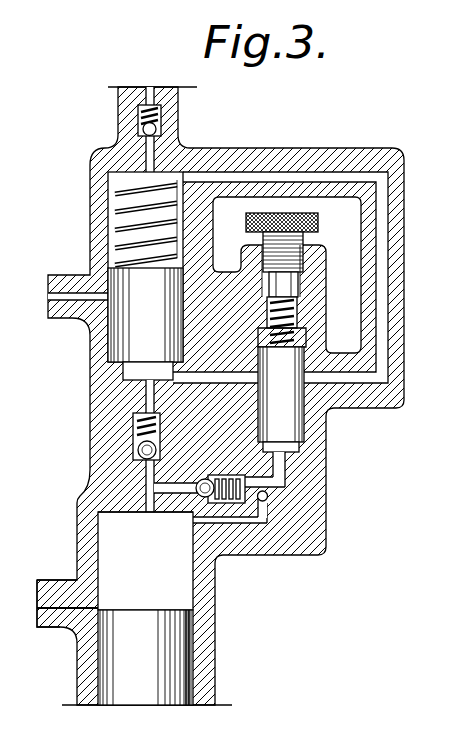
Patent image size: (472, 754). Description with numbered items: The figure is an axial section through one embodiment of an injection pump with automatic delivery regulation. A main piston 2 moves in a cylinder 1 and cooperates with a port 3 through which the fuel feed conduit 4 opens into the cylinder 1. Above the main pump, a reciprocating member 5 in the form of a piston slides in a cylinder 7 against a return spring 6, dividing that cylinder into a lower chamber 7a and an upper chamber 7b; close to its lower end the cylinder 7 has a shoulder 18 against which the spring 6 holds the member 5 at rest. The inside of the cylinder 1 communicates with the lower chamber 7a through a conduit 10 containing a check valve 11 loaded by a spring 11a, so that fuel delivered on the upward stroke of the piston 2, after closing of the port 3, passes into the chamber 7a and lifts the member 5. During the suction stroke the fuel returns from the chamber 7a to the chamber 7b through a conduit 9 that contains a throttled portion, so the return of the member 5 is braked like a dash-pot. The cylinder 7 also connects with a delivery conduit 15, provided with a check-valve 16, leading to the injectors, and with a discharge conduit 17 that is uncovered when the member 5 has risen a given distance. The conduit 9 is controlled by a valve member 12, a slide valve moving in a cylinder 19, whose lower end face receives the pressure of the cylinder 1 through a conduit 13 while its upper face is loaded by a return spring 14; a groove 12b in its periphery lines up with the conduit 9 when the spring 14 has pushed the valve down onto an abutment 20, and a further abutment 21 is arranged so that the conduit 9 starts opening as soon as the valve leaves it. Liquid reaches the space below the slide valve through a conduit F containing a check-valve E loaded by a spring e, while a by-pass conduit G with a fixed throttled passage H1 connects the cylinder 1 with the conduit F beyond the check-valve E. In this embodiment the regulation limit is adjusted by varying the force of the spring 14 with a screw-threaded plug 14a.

The cylinder 1 is at (193, 586).
The main piston 2 is at (170, 645).
The port 3 is at (98, 604).
The fuel feed conduit 4 is at (63, 604).
The reciprocating member 5 is at (127, 338).
The return spring 6 is at (108, 217).
The cylinder 7 is at (114, 248).
The lower chamber 7a is at (128, 372).
The chamber 7b is at (116, 194).
The conduit 9 is at (381, 212).
The conduit 10 is at (147, 498).
The check valve 11 is at (138, 450).
The spring 11a is at (133, 423).
The valve member 12 is at (289, 420).
The groove 12b is at (303, 387).
The conduit 13 is at (286, 475).
The return spring 14 is at (269, 302).
The screw-threaded plug 14a is at (279, 253).
The delivery conduit 15 is at (150, 157).
The check-valve 16 is at (162, 128).
The discharge conduit 17 is at (80, 300).
The shoulder 18 is at (140, 385).
The cylinder 19 is at (306, 340).
The abutment 20 is at (303, 447).
The abutment 21 is at (301, 332).
The check-valve E is at (180, 513).
The spring e is at (222, 503).
The conduit F is at (269, 490).
The by-pass conduit G is at (247, 523).
The throttled passage H1 is at (266, 512).